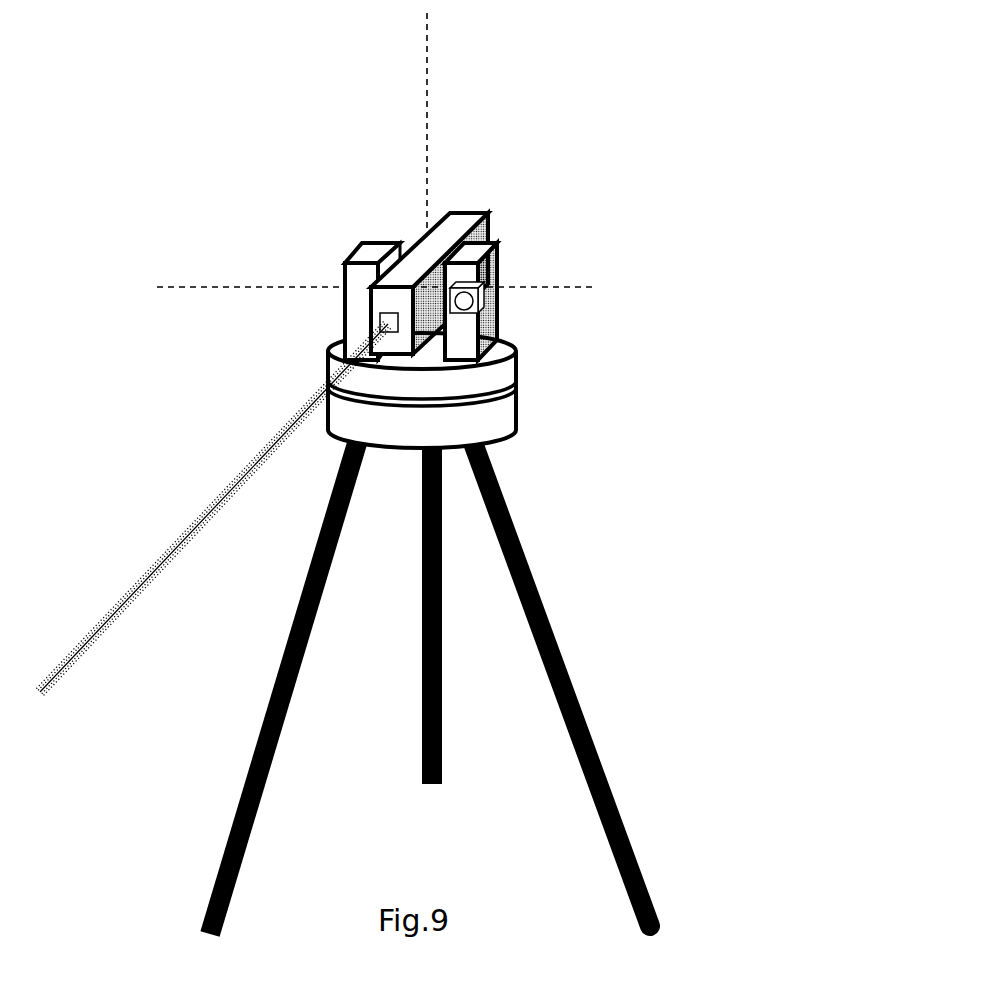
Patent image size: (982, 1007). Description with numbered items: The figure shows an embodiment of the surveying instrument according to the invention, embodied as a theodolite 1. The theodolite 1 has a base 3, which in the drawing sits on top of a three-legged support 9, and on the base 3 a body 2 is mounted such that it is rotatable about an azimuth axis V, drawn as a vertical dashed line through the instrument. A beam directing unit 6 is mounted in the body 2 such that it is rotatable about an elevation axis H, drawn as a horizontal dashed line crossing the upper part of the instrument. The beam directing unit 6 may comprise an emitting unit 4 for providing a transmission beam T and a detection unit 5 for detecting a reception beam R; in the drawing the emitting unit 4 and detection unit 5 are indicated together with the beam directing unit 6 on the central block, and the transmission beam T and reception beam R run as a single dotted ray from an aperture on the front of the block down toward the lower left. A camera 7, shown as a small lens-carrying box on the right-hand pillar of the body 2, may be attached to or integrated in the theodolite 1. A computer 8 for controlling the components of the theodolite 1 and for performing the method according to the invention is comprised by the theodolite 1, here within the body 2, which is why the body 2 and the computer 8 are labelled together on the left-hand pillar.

The theodolite 1 is at (485, 554).
The body 2 is at (336, 301).
The computer 8 is at (352, 277).
The beam directing unit 6 is at (416, 264).
The emitting unit 4 is at (416, 264).
The detection unit 5 is at (420, 250).
The camera 7 is at (483, 303).
The base 3 is at (505, 413).
The tripod leg 9 is at (572, 686).
The azimuth axis V is at (427, 72).
The elevation axis H is at (210, 287).
The transmission beam T is at (162, 560).
The reception beam R is at (175, 558).